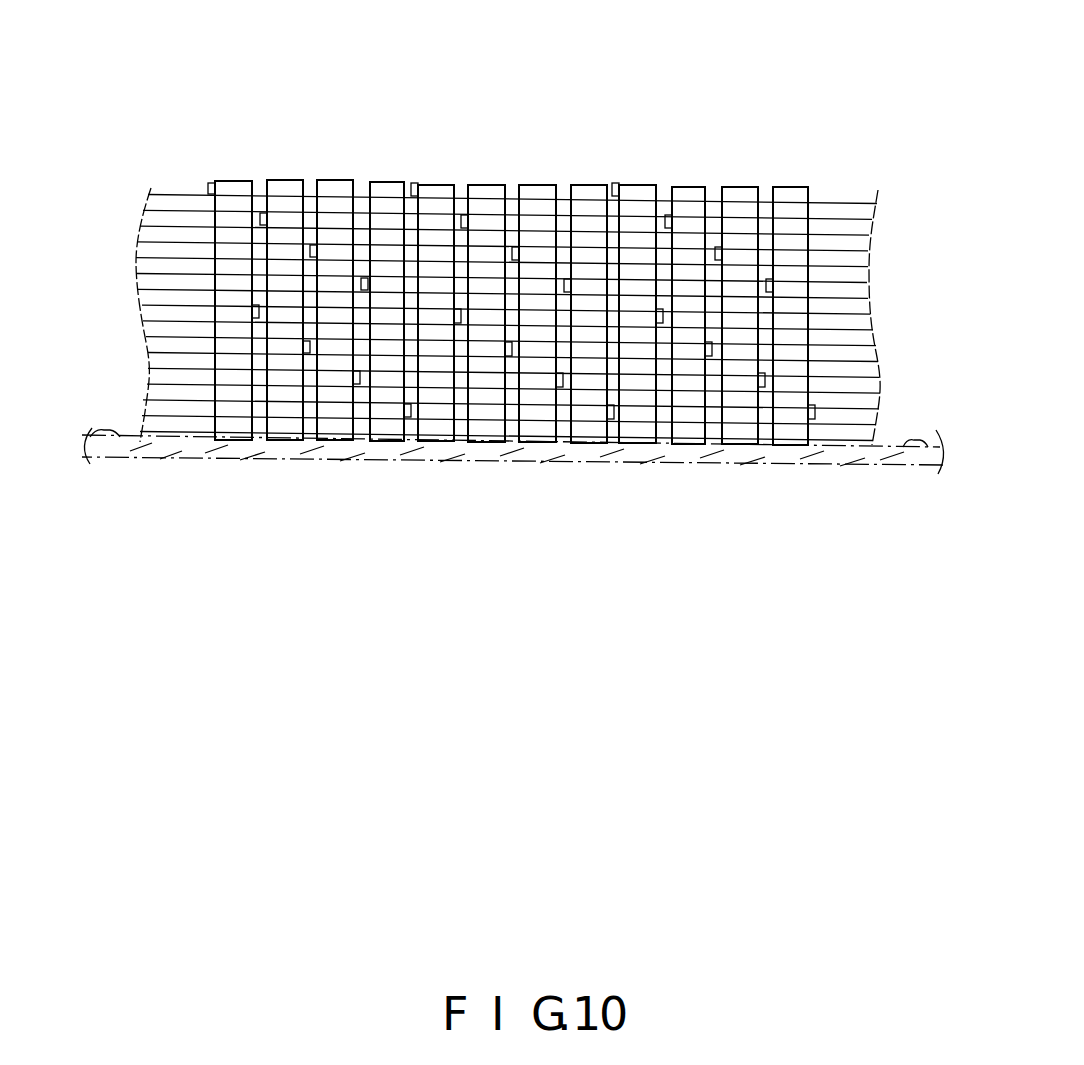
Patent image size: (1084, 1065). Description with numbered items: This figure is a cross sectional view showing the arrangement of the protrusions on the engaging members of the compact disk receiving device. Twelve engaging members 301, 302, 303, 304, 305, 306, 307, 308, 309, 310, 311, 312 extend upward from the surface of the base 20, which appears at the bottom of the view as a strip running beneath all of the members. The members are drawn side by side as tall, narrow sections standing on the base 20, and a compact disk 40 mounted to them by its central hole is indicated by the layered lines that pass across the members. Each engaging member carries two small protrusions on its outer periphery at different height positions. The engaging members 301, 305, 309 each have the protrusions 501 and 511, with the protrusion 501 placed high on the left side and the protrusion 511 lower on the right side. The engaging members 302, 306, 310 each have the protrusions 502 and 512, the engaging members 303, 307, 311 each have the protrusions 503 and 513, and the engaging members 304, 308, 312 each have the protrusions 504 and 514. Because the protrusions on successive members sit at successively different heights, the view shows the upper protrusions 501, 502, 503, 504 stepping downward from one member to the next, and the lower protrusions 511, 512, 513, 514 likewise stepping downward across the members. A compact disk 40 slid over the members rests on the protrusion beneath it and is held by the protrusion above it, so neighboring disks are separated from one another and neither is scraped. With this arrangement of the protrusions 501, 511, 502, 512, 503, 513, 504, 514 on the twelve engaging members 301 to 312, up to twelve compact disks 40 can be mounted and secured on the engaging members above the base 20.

The base 20 is at (880, 457).
The compact disk 40 is at (859, 212).
The engaging member 301 is at (233, 190).
The engaging member 302 is at (285, 187).
The engaging member 303 is at (343, 188).
The engaging member 304 is at (392, 190).
The engaging member 305 is at (435, 192).
The engaging member 306 is at (488, 192).
The engaging member 307 is at (538, 195).
The engaging member 308 is at (592, 197).
The engaging member 309 is at (638, 197).
The engaging member 310 is at (685, 202).
The engaging member 311 is at (740, 198).
The engaging member 312 is at (793, 200).
The protrusion 501 is at (210, 187).
The protrusion 502 is at (263, 213).
The protrusion 503 is at (313, 246).
The protrusion 504 is at (364, 279).
The protrusion 511 is at (253, 318).
The protrusion 512 is at (304, 352).
The protrusion 513 is at (355, 383).
The protrusion 514 is at (405, 416).